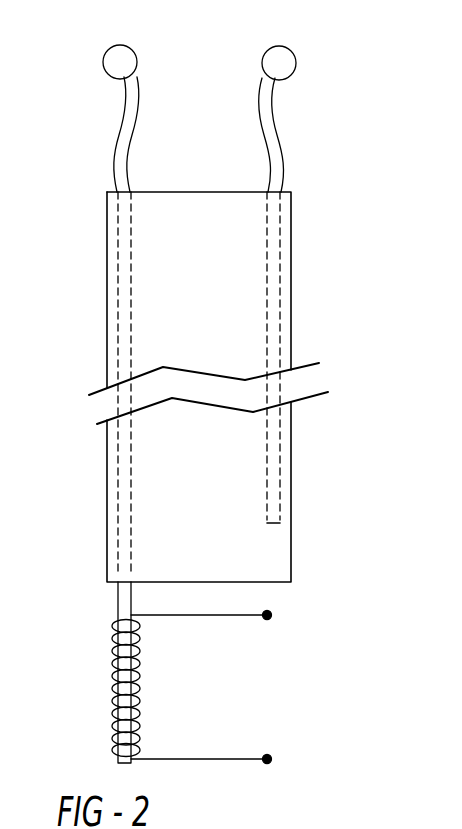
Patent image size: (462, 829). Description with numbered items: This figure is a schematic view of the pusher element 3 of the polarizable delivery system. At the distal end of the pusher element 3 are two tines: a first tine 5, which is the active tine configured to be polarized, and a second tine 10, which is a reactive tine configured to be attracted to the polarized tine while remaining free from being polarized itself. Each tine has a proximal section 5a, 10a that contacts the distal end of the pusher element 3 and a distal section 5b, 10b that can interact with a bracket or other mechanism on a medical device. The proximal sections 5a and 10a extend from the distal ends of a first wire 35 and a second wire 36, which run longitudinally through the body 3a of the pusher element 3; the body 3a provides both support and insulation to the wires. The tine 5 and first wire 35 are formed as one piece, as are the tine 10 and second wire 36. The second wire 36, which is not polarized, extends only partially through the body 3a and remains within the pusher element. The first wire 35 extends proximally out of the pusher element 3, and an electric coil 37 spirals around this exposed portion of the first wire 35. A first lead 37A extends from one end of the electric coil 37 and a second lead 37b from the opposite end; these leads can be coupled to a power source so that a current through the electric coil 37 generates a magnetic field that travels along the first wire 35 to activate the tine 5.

The pusher element 3 is at (349, 376).
The body 3a is at (203, 287).
The first tine 5 is at (128, 127).
The proximal section 5a is at (117, 167).
The distal section 5b is at (133, 90).
The second tine 10 is at (271, 127).
The proximal section 10a is at (281, 173).
The distal section 10b is at (264, 88).
The first wire 35 is at (128, 330).
The second wire 36 is at (273, 298).
The electric coil 37 is at (250, 685).
The first lead 37A is at (270, 619).
The second lead 37b is at (270, 763).